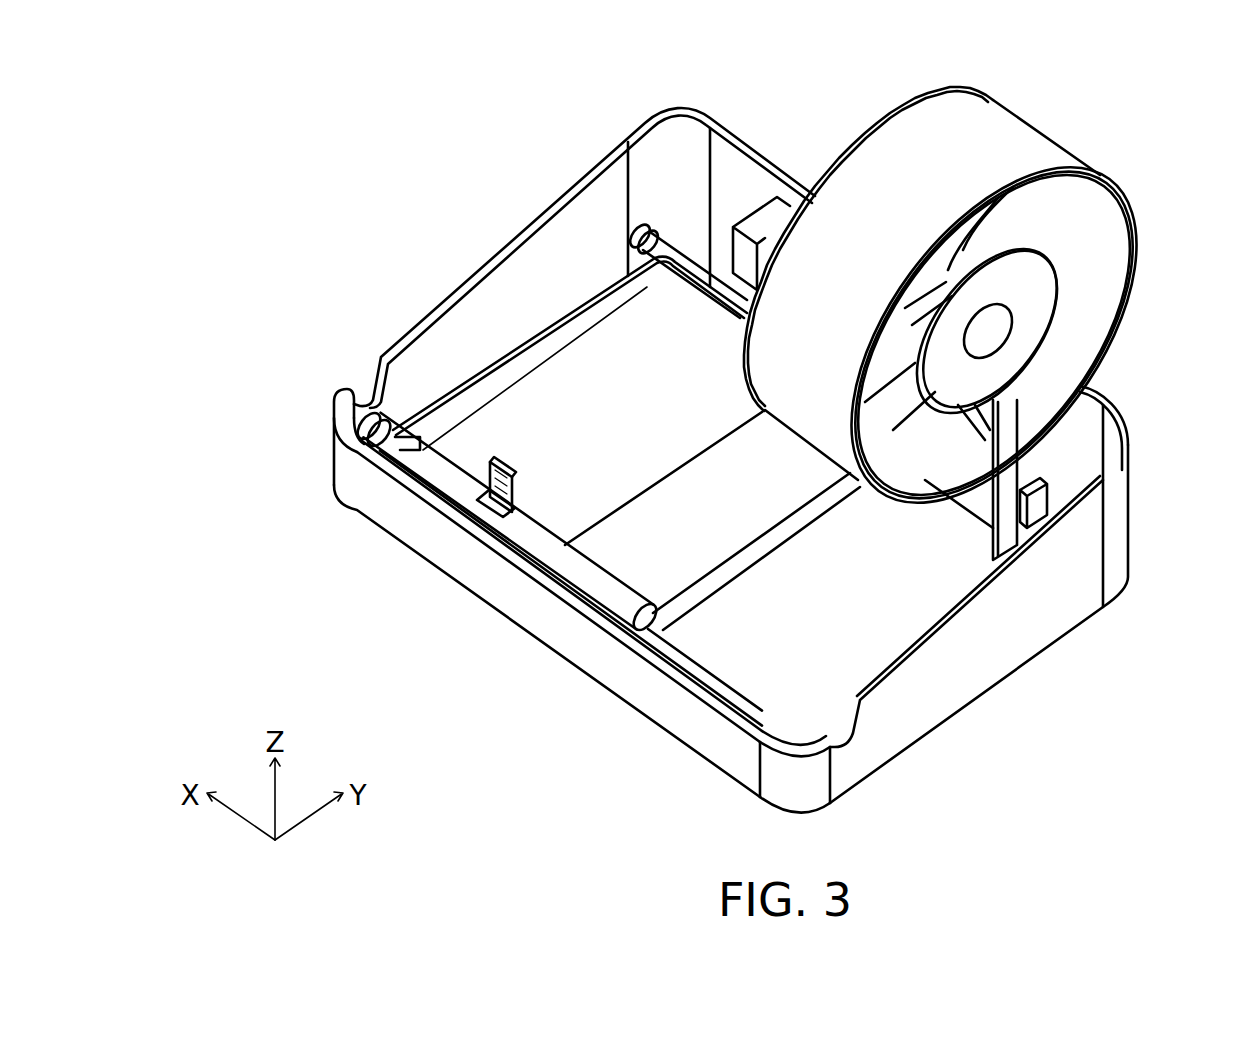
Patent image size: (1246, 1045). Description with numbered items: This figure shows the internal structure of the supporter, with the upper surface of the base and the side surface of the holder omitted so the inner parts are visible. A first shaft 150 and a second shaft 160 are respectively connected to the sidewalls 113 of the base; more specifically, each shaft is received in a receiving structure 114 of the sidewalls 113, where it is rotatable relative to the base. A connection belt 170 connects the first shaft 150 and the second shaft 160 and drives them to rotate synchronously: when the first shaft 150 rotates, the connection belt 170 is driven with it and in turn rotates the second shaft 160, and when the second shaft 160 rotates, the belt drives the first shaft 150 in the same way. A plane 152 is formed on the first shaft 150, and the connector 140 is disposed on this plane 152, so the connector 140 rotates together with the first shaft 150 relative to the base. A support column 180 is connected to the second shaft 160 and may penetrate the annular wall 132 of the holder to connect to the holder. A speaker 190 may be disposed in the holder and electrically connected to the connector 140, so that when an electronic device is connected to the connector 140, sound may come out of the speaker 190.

The sidewalls 113 is at (530, 246).
The receiving structures 114 is at (631, 232).
The annular wall 132 is at (1010, 135).
The connector 140 is at (485, 497).
The first shaft 150 is at (712, 668).
The plane 152 is at (527, 537).
The second shaft 160 is at (667, 242).
The connection belt 170 is at (617, 573).
The support column 180 is at (1004, 410).
The speaker 190 is at (1020, 291).